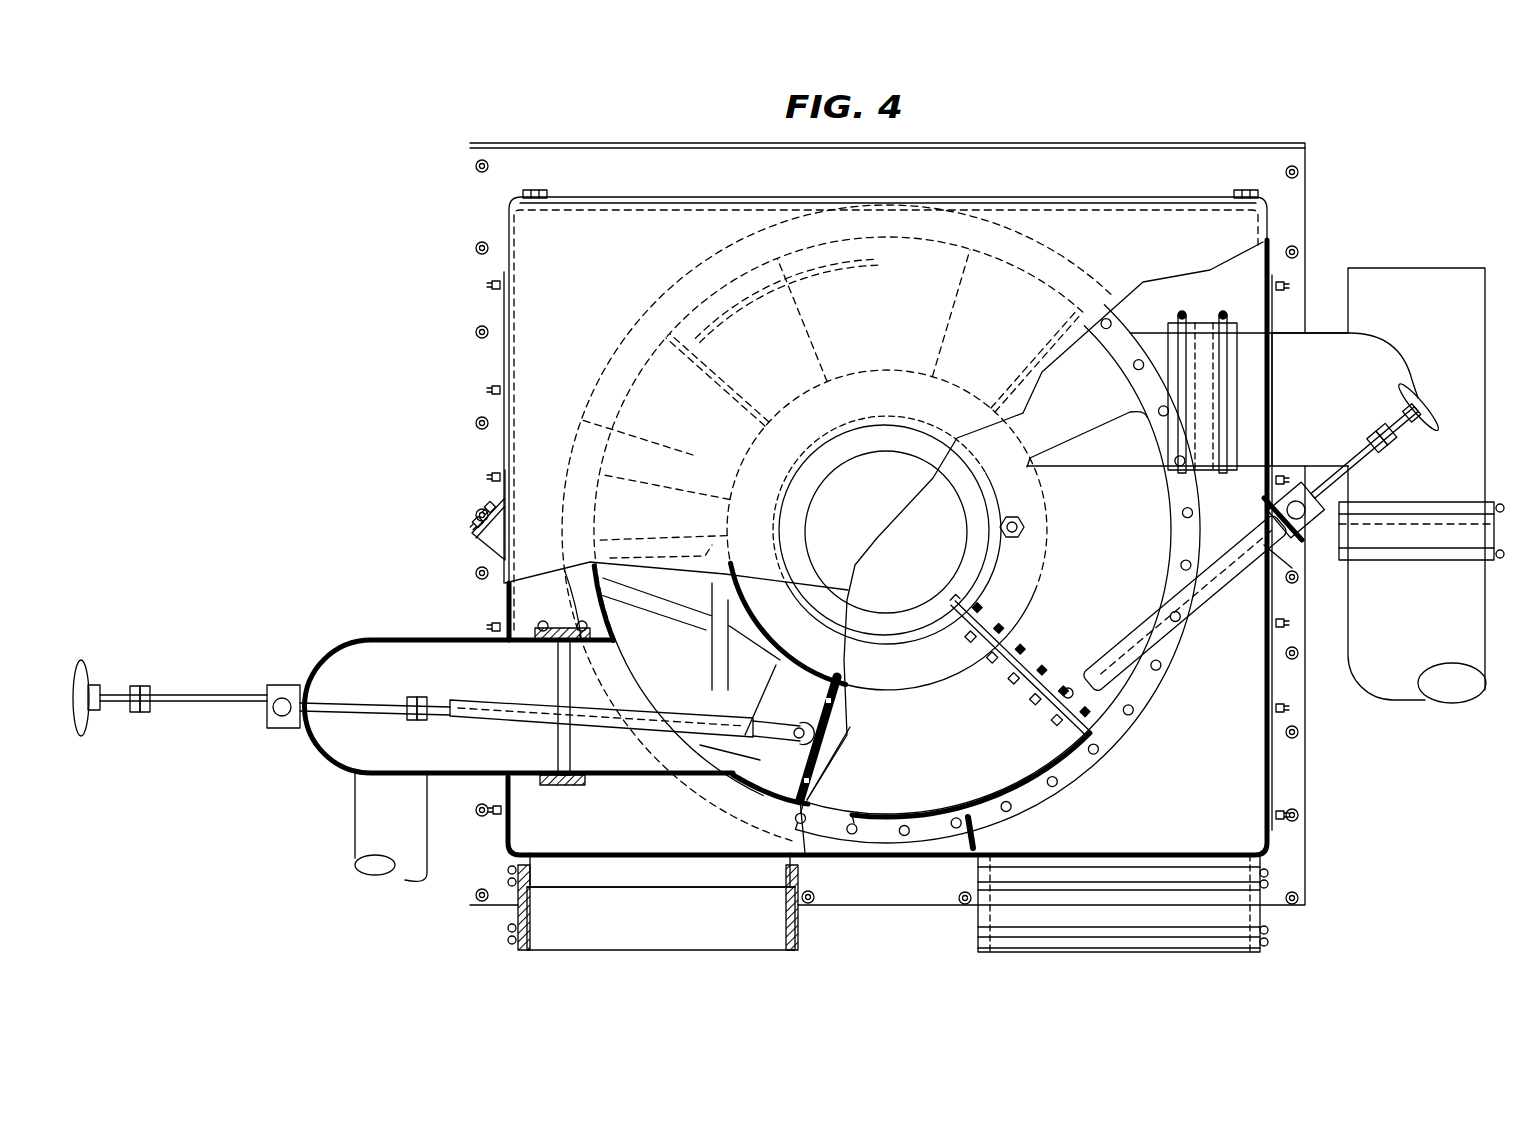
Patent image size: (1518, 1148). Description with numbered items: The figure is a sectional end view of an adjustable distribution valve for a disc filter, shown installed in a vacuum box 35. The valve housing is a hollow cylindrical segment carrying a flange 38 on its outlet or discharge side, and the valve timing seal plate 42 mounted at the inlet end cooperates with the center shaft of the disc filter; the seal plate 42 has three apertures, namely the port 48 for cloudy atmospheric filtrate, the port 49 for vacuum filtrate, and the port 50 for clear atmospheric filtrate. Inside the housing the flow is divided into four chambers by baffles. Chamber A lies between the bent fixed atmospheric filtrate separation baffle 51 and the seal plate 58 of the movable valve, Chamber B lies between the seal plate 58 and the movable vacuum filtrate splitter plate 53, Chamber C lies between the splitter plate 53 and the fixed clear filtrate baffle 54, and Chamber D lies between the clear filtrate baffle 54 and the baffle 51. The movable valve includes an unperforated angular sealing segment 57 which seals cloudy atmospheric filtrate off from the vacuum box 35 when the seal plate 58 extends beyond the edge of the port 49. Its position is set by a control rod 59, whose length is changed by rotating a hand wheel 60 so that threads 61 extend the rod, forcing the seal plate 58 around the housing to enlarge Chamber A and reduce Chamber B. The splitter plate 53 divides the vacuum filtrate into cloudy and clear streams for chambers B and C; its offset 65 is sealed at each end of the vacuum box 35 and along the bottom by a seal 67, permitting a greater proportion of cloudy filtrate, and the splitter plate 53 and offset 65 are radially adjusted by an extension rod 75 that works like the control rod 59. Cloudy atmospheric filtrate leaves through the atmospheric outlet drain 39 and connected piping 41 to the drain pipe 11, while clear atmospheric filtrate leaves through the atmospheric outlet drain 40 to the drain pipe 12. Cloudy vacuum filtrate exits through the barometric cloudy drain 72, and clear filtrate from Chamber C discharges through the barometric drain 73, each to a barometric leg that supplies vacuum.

The drain pipe 11 is at (356, 825).
The drain pipe 12 is at (1388, 708).
The vacuum box 35 is at (1262, 720).
The flange 38 is at (1108, 748).
The atmospheric outlet drain for cloudy filtrate 39 is at (650, 782).
The atmospheric outlet drain for clear filtrate 40 is at (1150, 330).
The connected piping 41 is at (318, 758).
The valve timing seal plate 42 is at (1370, 540).
The port 48 is at (676, 514).
The port 49 is at (1075, 535).
The port 50 is at (860, 345).
The atmospheric filtrate separation baffle 51 is at (728, 378).
The movable vacuum filtrate splitter plate 53 is at (1020, 683).
The fixed clear filtrate baffle 54 is at (1030, 362).
The angular sealing segment 57 is at (985, 570).
The seal plate 58 is at (832, 730).
The control rod 59 is at (672, 718).
The hand wheel 60 is at (92, 665).
The threads 61 is at (510, 712).
The offset 65 is at (920, 803).
The seal 67 is at (977, 840).
The barometric cloudy drain 72 is at (572, 853).
The barometric drain 73 is at (1162, 855).
The extension rod 75 is at (1100, 655).